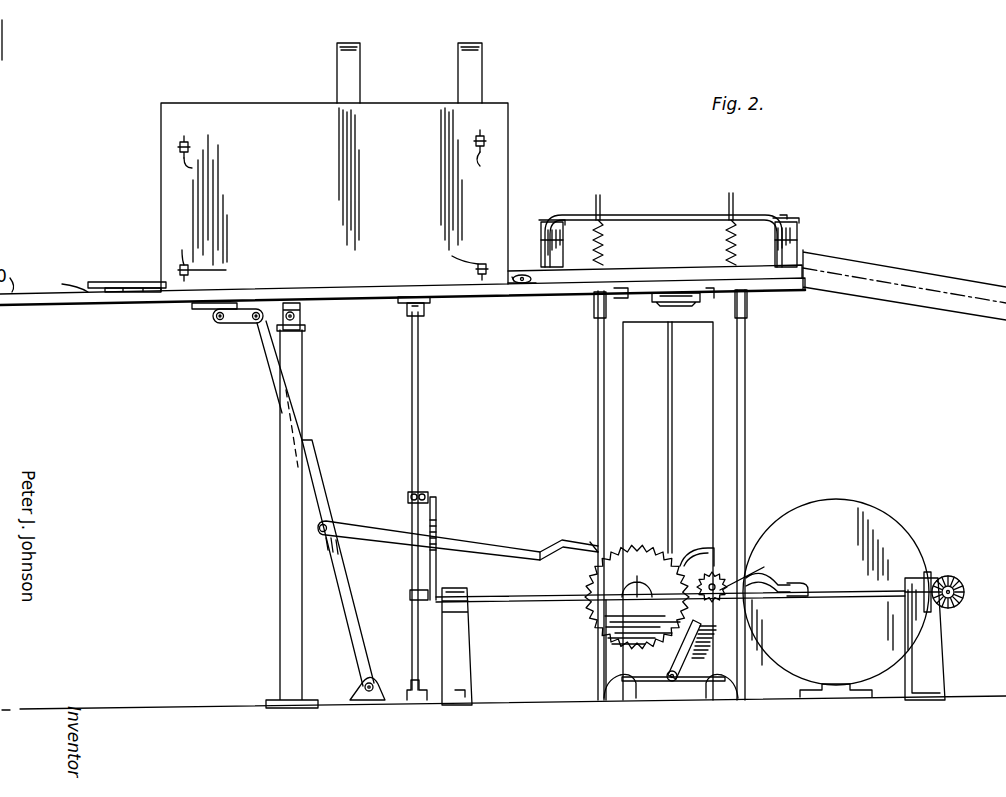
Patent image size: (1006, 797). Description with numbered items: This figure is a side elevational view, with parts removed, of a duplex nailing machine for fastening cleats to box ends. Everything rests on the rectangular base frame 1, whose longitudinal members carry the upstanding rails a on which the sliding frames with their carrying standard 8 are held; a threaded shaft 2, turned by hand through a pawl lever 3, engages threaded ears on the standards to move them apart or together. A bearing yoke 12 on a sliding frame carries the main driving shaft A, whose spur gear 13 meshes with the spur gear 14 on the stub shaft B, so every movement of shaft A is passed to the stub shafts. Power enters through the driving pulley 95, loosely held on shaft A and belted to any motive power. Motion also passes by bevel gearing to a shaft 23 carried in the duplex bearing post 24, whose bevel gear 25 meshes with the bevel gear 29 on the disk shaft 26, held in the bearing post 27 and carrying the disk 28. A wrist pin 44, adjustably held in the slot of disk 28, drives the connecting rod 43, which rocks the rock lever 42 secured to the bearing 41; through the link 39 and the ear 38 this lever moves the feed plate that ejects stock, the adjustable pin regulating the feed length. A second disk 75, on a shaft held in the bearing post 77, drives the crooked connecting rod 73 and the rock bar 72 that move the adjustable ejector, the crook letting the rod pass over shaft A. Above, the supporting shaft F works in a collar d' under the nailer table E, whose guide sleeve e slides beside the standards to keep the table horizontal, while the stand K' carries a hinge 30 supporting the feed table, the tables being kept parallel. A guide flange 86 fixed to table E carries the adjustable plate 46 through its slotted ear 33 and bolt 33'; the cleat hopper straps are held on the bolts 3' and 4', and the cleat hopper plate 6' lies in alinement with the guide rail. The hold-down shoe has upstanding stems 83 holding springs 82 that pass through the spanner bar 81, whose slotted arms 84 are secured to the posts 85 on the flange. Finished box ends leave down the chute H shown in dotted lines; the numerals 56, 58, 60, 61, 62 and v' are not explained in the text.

The rectangular base frame 1 is at (654, 692).
The threaded shaft 2 is at (676, 682).
The pawl lever 3 is at (712, 678).
The lower bolt 3' is at (339, 251).
The upper bolt 4' is at (334, 129).
The cleat hopper plate 6' is at (409, 73).
The carrying standard 8 is at (668, 511).
The bearing yoke 12 is at (605, 647).
The spur gear 13 is at (750, 578).
The spur gear 14 is at (598, 548).
The shaft 23 is at (962, 580).
The duplex bearing post 24 is at (927, 639).
The bevel gear 25 is at (965, 596).
The disk shaft 26 is at (478, 596).
The bearing post 27 is at (457, 646).
The disk 28 is at (437, 506).
The bevel gear 29 is at (930, 572).
The hinge 30 is at (301, 316).
The slotted ear 33 is at (519, 301).
The bolt 33' is at (490, 298).
The ear 38 is at (400, 304).
The link 39 is at (424, 314).
The bearing 41 is at (420, 702).
The rock lever 42 is at (410, 392).
The connecting rod 43 is at (410, 518).
The wrist pin 44 is at (410, 596).
The adjustable plate 46 is at (334, 197).
The plate 56 is at (78, 284).
The bracket 58 is at (198, 310).
The link 60 is at (234, 323).
The plate 61 is at (132, 287).
The plate 62 is at (98, 281).
The rock bar 72 is at (313, 522).
The crooked connecting rod 73 is at (386, 560).
The disk 75 is at (836, 592).
The bearing post 77 is at (838, 700).
The spanner bar 81 is at (672, 215).
The spring 82 is at (604, 250).
The upstanding stem 83 is at (598, 195).
The slotted arm 84 is at (545, 221).
The post 85 is at (541, 245).
The guide flange 86 is at (647, 262).
The driving pulley 95 is at (702, 546).
The main driving shaft A is at (716, 596).
The stub shaft B is at (637, 596).
The nailer table E is at (548, 290).
The supporting shaft F is at (672, 370).
The chute H is at (965, 270).
The stand K' is at (278, 516).
The upstanding rail a is at (604, 676).
The collar d' is at (664, 303).
The guide sleeve e is at (594, 314).
The valve stem v' is at (331, 207).